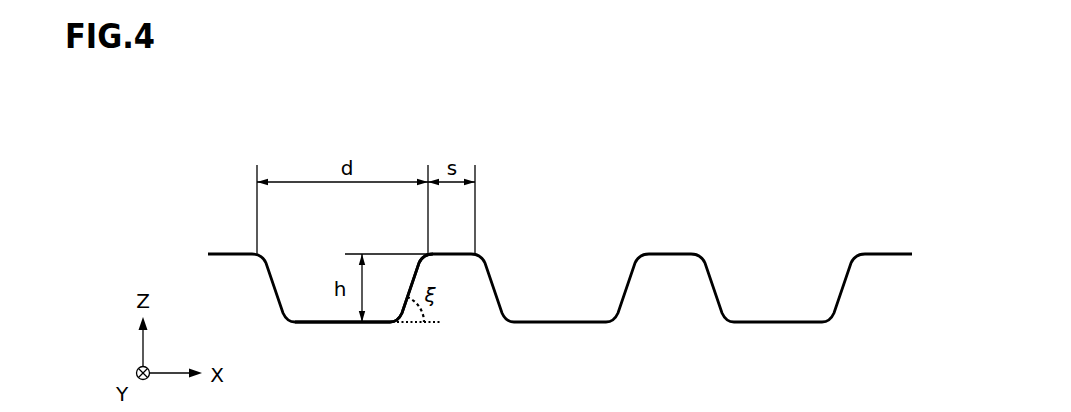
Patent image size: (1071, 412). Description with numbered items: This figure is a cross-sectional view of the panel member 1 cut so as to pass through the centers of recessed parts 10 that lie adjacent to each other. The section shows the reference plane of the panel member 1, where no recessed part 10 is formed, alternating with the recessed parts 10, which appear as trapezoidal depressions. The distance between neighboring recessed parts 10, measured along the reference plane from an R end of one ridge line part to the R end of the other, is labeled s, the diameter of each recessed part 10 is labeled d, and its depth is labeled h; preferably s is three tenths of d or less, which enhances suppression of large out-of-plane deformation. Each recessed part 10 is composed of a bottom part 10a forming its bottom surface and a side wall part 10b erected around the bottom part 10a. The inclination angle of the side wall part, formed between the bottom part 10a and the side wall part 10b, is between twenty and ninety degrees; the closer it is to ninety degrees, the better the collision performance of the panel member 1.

The panel member 1 is at (560, 254).
The recessed part 10 is at (308, 278).
The bottom part 10a is at (318, 325).
The side wall part 10b is at (409, 267).